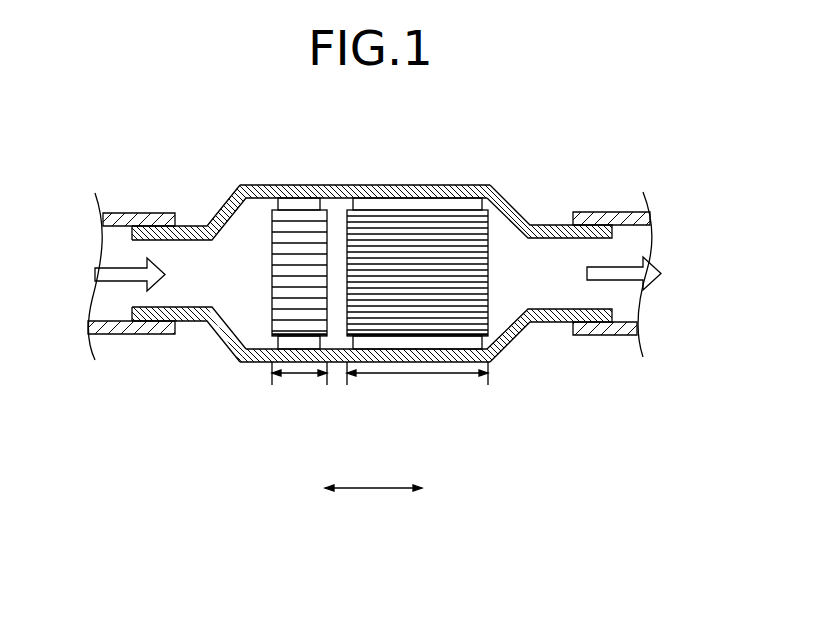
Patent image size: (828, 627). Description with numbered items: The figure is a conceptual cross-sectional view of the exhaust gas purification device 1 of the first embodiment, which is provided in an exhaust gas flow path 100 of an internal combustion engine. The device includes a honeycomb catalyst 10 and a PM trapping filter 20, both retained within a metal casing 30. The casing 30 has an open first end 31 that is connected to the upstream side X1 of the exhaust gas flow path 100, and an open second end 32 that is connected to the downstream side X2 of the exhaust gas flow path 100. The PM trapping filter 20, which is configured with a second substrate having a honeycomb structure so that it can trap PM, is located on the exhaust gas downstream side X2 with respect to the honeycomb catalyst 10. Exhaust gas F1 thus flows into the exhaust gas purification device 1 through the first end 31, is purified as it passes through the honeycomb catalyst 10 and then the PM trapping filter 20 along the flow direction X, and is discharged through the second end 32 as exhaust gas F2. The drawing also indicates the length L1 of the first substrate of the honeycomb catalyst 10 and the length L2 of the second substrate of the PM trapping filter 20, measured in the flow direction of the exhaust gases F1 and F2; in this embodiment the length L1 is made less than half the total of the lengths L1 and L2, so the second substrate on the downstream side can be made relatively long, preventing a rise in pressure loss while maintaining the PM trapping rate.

The exhaust gas purification device 1 is at (372, 256).
The honeycomb catalyst 10 is at (297, 213).
The PM trapping filter 20 is at (414, 213).
The casing 30 is at (487, 185).
The first end 31 is at (171, 333).
The second end 32 is at (557, 322).
The exhaust gas flow path 100 is at (141, 213).
The exhaust gas F1 is at (115, 282).
The exhaust gas F2 is at (620, 281).
The length of the first substrate L1 is at (298, 374).
The length of the second substrate L2 is at (413, 374).
The flow direction X is at (373, 504).
The upstream side X1 is at (298, 501).
The downstream side X2 is at (447, 501).